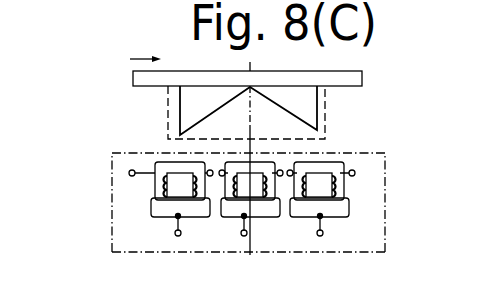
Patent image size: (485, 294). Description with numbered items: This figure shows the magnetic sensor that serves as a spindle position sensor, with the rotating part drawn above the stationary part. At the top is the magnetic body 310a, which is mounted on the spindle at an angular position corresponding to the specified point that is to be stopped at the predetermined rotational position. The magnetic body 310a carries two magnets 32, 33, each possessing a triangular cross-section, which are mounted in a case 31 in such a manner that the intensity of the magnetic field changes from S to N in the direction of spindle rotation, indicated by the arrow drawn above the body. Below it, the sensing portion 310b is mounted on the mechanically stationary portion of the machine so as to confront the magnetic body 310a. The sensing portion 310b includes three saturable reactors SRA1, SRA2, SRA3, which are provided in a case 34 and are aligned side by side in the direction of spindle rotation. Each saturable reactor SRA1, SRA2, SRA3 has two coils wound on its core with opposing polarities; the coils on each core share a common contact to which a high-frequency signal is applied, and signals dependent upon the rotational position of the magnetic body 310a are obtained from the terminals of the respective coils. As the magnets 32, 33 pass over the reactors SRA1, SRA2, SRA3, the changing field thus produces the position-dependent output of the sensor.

The magnetic body 310a is at (343, 107).
The magnet 32 is at (168, 103).
The magnet 33 is at (322, 118).
The case 31 is at (168, 135).
The sensing portion 310b is at (385, 230).
The case 34 is at (112, 247).
The saturable reactor SRA1 is at (136, 186).
The saturable reactor SRA2 is at (270, 227).
The saturable reactor SRA3 is at (355, 182).